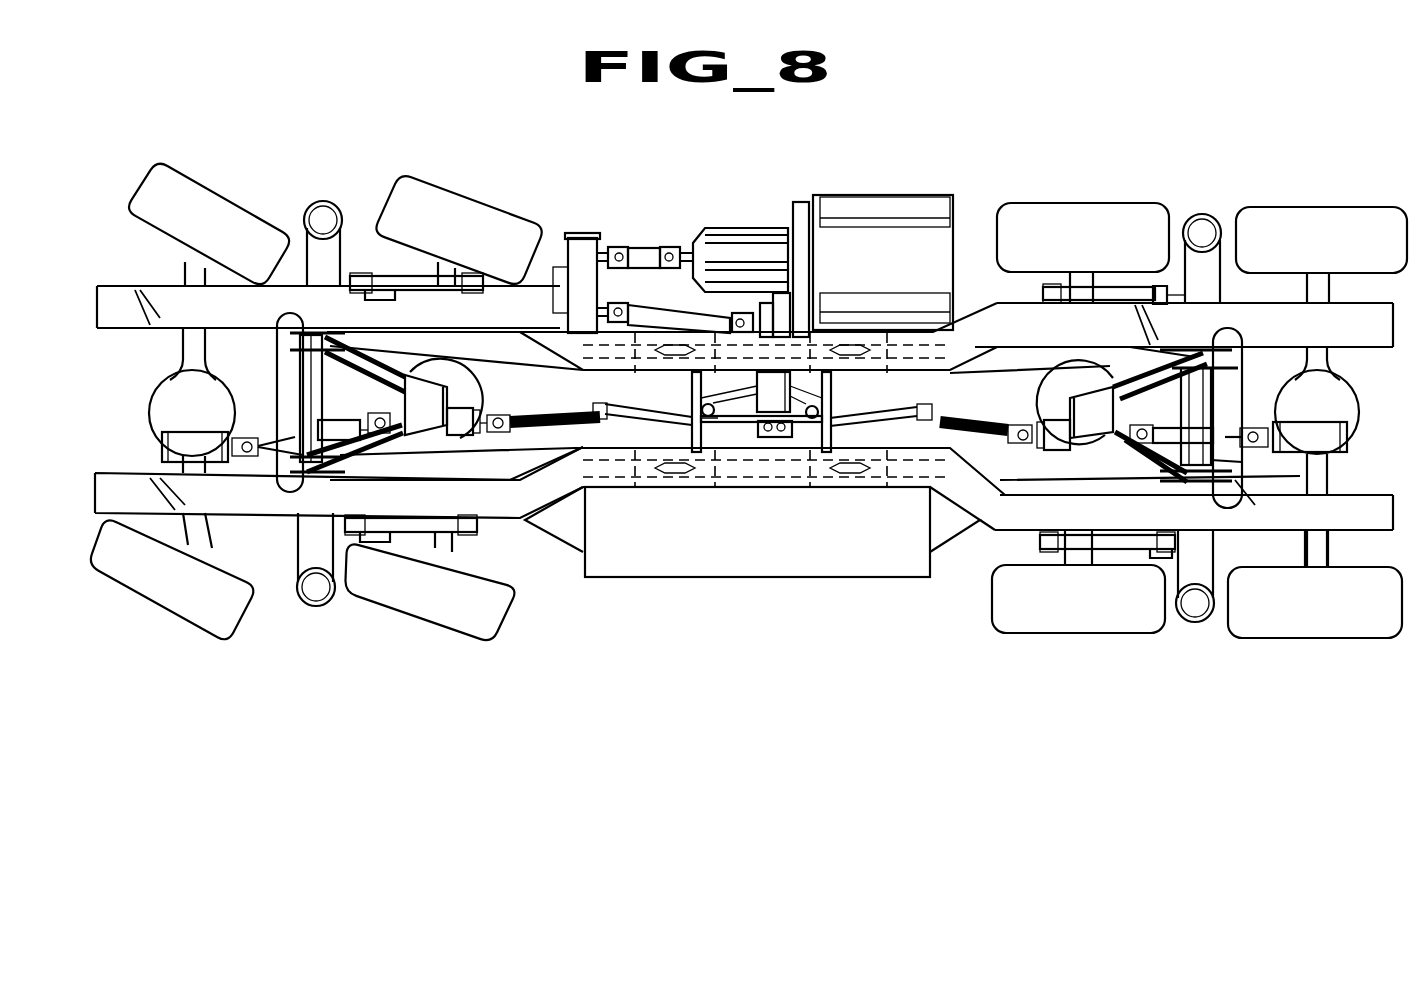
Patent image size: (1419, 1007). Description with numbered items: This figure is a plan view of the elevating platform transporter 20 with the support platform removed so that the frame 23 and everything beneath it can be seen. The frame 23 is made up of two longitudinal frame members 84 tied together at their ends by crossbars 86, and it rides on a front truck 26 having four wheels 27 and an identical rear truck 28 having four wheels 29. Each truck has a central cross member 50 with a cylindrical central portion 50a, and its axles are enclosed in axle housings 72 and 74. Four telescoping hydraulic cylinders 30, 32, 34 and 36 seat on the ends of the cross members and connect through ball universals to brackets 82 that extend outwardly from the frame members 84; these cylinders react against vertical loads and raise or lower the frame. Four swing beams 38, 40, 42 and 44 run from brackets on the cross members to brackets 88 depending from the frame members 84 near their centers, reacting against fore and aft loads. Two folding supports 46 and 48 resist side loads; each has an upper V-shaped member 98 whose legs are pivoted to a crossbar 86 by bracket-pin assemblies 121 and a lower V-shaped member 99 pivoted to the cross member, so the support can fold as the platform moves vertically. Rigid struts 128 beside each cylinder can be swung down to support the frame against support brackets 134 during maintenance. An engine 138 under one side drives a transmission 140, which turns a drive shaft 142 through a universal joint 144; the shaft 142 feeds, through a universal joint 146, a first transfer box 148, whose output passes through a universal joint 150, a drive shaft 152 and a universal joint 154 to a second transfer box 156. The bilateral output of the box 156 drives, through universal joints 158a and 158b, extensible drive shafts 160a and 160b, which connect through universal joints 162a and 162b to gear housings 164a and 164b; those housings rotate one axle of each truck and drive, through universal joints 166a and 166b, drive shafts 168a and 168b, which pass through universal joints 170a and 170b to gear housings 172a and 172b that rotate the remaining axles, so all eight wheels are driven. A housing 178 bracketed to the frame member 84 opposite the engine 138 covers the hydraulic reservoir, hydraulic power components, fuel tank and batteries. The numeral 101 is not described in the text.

The elevating platform transporter 20 is at (695, 605).
The frame 23 is at (571, 508).
The front truck 26 is at (149, 378).
The wheels 27 is at (176, 198).
The rear truck 28 is at (1000, 397).
The wheels 29 is at (1091, 233).
The telescoping hydraulic cylinder 30 is at (302, 603).
The telescoping hydraulic cylinder 32 is at (328, 200).
The telescoping hydraulic cylinder 34 is at (1192, 620).
The telescoping hydraulic cylinder 36 is at (1196, 222).
The swing beam 38 is at (510, 472).
The swing beam 40 is at (545, 338).
The swing beam 42 is at (1032, 480).
The swing beam 44 is at (1040, 350).
The folding support 46 is at (427, 431).
The folding support 48 is at (1082, 448).
The central cross member 50 is at (292, 393).
The cylindrical central portion 50a is at (372, 374).
The axle housing 72 is at (183, 259).
The axle housing 74 is at (445, 272).
The bracket 82 is at (308, 249).
The longitudinal frame member 84 is at (185, 313).
The crossbar 86 is at (280, 358).
The bracket 88 is at (640, 413).
The upper V-shaped member 98 is at (392, 359).
The lower V-shaped member 99 is at (345, 455).
The housing wall 101 is at (463, 394).
The bracket-pin assembly 121 is at (316, 330).
The rigid strut 128 is at (410, 282).
The support bracket 134 is at (382, 290).
The engine 138 is at (886, 271).
The transmission 140 is at (738, 232).
The drive shaft 142 is at (644, 246).
The universal joint 144 is at (670, 246).
The universal joint 146 is at (617, 252).
The first transfer box 148 is at (568, 238).
The universal joint 150 is at (615, 303).
The drive shaft 152 is at (650, 292).
The universal joint 154 is at (735, 316).
The second transfer box 156 is at (760, 438).
The universal joint 158a is at (706, 400).
The universal joint 158b is at (810, 418).
The drive shaft 160a is at (585, 430).
The drive shaft 160b is at (925, 428).
The universal joint 162a is at (500, 415).
The universal joint 162b is at (1022, 447).
The gear housing 164a is at (488, 377).
The gear housing 164b is at (1050, 378).
The universal joint 166a is at (385, 445).
The universal joint 166b is at (1155, 418).
The drive shaft 168a is at (300, 430).
The drive shaft 168b is at (1225, 468).
The universal joint 170a is at (246, 462).
The universal joint 170b is at (1262, 428).
The gear housing 172a is at (222, 416).
The gear housing 172b is at (1322, 395).
The housing 178 is at (780, 535).